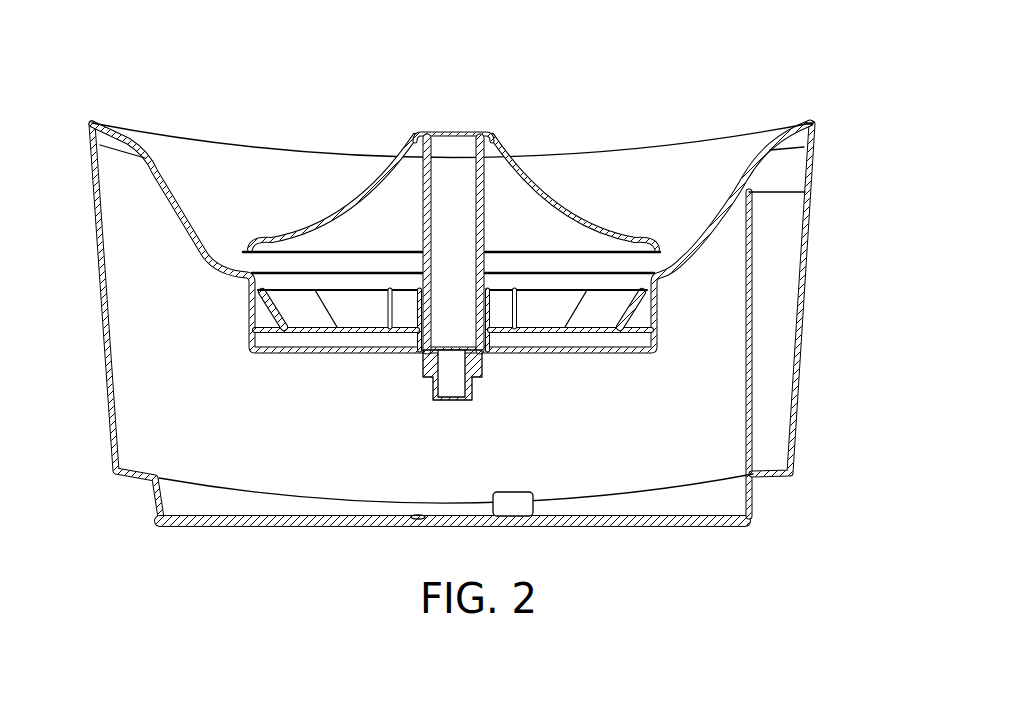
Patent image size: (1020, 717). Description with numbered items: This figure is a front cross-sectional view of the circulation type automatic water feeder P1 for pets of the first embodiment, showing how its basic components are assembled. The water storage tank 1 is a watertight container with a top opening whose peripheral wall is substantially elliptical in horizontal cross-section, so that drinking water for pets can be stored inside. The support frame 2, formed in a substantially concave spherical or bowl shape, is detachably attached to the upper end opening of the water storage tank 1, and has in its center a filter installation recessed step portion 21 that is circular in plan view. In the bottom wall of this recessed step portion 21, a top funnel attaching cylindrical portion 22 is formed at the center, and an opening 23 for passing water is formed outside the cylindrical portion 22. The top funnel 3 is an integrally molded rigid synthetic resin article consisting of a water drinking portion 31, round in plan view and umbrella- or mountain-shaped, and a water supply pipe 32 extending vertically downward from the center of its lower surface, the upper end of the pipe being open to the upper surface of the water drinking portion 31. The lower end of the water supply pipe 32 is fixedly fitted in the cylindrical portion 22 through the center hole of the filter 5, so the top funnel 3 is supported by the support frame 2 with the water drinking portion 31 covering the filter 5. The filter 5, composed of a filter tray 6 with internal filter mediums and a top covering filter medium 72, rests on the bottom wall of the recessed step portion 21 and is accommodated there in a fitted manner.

The water storage tank 1 is at (718, 404).
The support frame 2 is at (688, 160).
The top funnel 3 is at (539, 170).
The water drinking portion 31 is at (506, 140).
The water supply pipe 32 is at (420, 210).
The filter 5 is at (576, 288).
The top covering filter medium 72 is at (303, 290).
The filter installation recessed step portion 21 is at (249, 303).
The filter tray 6 is at (273, 311).
The top funnel attaching cylindrical portion 22 is at (483, 364).
The opening 23 is at (604, 333).
The circulation type automatic water feeder for pets P1 is at (789, 106).